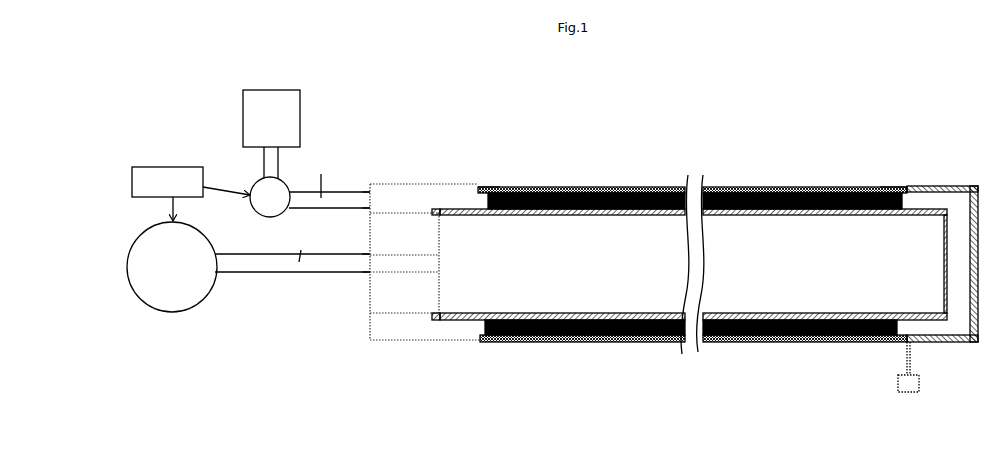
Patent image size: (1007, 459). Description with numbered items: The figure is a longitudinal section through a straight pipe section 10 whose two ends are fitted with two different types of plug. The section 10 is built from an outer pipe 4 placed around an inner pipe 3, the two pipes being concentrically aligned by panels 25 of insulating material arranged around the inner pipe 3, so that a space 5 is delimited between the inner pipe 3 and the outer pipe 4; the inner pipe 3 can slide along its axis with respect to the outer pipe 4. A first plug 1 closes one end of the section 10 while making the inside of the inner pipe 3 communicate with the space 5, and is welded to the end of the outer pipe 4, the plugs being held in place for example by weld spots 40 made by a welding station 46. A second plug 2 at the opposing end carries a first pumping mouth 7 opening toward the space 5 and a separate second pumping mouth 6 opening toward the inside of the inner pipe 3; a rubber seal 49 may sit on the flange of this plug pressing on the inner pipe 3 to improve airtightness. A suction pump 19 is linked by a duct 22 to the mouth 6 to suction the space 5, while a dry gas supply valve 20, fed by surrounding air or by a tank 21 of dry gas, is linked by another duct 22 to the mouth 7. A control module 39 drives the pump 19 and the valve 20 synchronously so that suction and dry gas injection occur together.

The first plug 1 is at (926, 178).
The second plug 2 is at (415, 148).
The inner pipe 3 is at (610, 215).
The outer pipe 4 is at (607, 342).
The space 5 is at (530, 193).
The second pumping mouth 6 is at (360, 255).
The first pumping mouth 7 is at (362, 191).
The section 10 is at (740, 165).
The suction pump 19 is at (172, 267).
The valve 20 is at (270, 197).
The tank 21 is at (271, 118).
The duct 22 is at (272, 158).
The panels of insulating material 25 is at (587, 197).
The control module 39 is at (191, 194).
The weld spots 40 is at (500, 187).
The welding station 46 is at (908, 367).
The rubber seal 49 is at (440, 210).